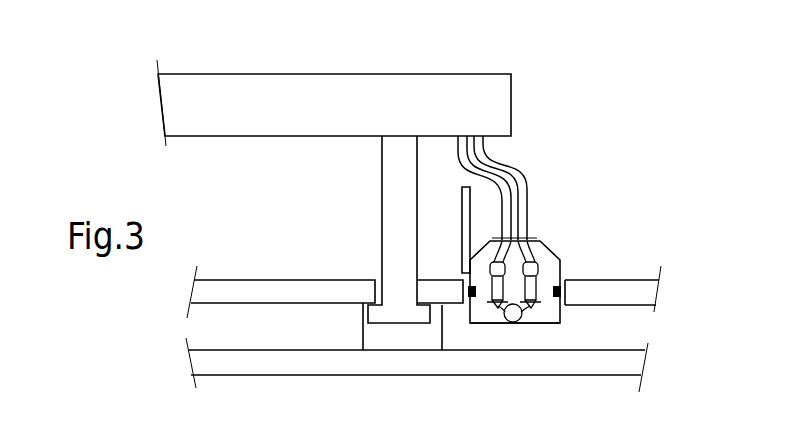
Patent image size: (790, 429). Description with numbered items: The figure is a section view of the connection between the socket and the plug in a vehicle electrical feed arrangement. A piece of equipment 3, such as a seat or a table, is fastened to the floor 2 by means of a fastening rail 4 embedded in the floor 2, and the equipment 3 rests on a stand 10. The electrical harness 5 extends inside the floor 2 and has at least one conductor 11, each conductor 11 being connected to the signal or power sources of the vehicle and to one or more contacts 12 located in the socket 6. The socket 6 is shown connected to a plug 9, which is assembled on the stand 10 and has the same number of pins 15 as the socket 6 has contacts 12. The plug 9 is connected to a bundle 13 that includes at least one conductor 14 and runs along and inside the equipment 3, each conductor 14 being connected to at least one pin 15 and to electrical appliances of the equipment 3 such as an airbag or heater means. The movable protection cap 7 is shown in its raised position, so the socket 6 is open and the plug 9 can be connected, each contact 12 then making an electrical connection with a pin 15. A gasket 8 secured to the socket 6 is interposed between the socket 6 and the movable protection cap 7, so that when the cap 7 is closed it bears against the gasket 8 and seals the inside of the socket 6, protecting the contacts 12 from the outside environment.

The floor 2 is at (247, 287).
The piece of equipment 3 is at (498, 93).
The fastening rail 4 is at (377, 341).
The electrical harness 5 is at (498, 320).
The socket 6 is at (552, 313).
The movable protection cap 7 is at (463, 250).
The gasket 8 is at (473, 293).
The plug 9 is at (545, 248).
The stand 10 is at (390, 218).
The conductor 11 is at (490, 303).
The contact 12 is at (533, 306).
The bundle 13 is at (528, 198).
The conductor 14 is at (497, 178).
The pin 15 is at (539, 267).